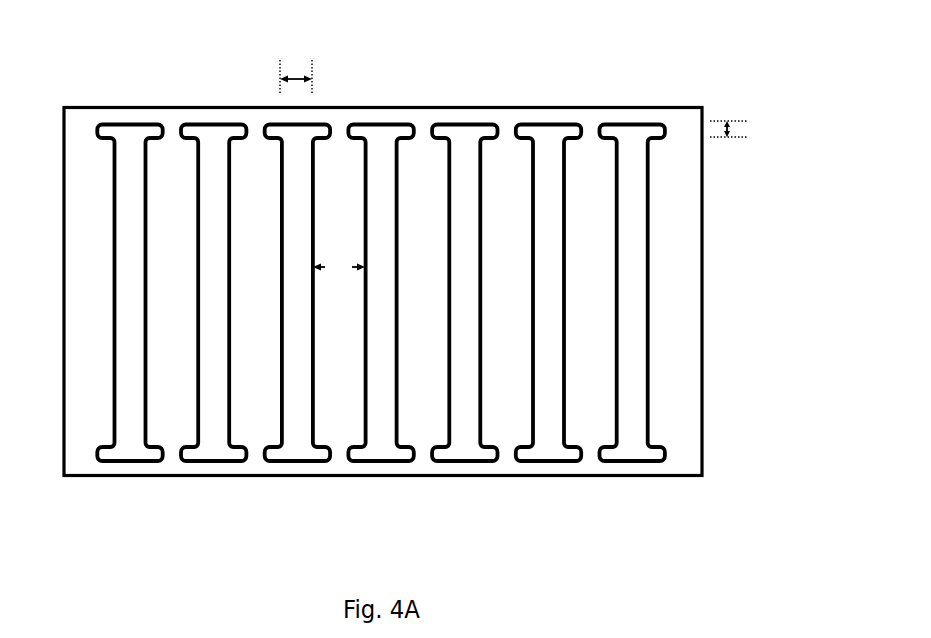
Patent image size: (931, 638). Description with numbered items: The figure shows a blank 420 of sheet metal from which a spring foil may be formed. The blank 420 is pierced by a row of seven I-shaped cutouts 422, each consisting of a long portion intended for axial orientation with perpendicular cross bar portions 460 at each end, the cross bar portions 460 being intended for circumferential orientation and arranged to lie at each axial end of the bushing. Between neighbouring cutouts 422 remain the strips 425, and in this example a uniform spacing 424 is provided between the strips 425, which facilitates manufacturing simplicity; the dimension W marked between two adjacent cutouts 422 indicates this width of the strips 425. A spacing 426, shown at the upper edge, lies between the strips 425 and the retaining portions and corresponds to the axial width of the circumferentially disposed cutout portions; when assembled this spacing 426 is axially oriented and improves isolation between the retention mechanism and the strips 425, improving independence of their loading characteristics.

The blank 420 is at (78, 452).
The cutouts 422 is at (632, 438).
The uniform spacing 424 is at (298, 58).
The strips 425 is at (508, 212).
The spacing 426 is at (742, 128).
The cross bar portions 460 is at (365, 313).
The land width W is at (339, 268).